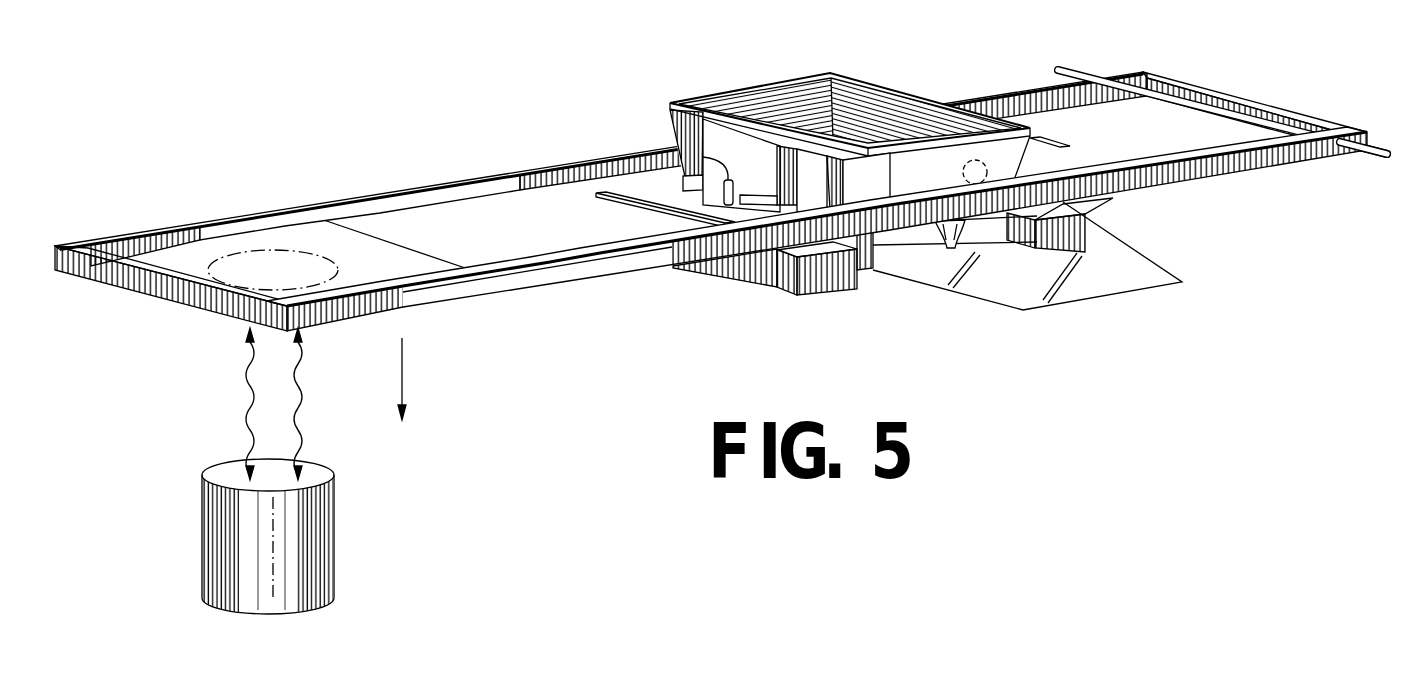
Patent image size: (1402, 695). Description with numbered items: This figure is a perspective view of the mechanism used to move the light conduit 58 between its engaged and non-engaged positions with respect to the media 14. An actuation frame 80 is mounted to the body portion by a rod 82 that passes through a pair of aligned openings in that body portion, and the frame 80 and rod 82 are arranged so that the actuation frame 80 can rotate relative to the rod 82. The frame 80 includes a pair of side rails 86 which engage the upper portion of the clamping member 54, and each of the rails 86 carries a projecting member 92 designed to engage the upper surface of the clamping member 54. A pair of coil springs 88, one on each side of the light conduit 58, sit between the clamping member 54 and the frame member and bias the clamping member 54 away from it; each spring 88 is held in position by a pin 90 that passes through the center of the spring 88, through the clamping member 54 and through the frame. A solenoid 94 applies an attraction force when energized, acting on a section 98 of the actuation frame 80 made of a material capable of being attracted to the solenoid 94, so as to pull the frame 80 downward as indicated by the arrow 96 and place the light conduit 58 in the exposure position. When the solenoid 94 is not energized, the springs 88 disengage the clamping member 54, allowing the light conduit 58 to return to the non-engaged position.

The media 14 is at (1158, 268).
The clamping member 54 is at (988, 250).
The light conduit 58 is at (900, 80).
The actuation frame 80 is at (1193, 78).
The rod 82 is at (1193, 110).
The side rails 86 is at (450, 198).
The coil springs 88 is at (713, 225).
The pin 90 is at (685, 143).
The projecting member 92 is at (946, 223).
The solenoid 94 is at (333, 537).
The arrow 96 is at (402, 370).
The section 98 is at (443, 261).